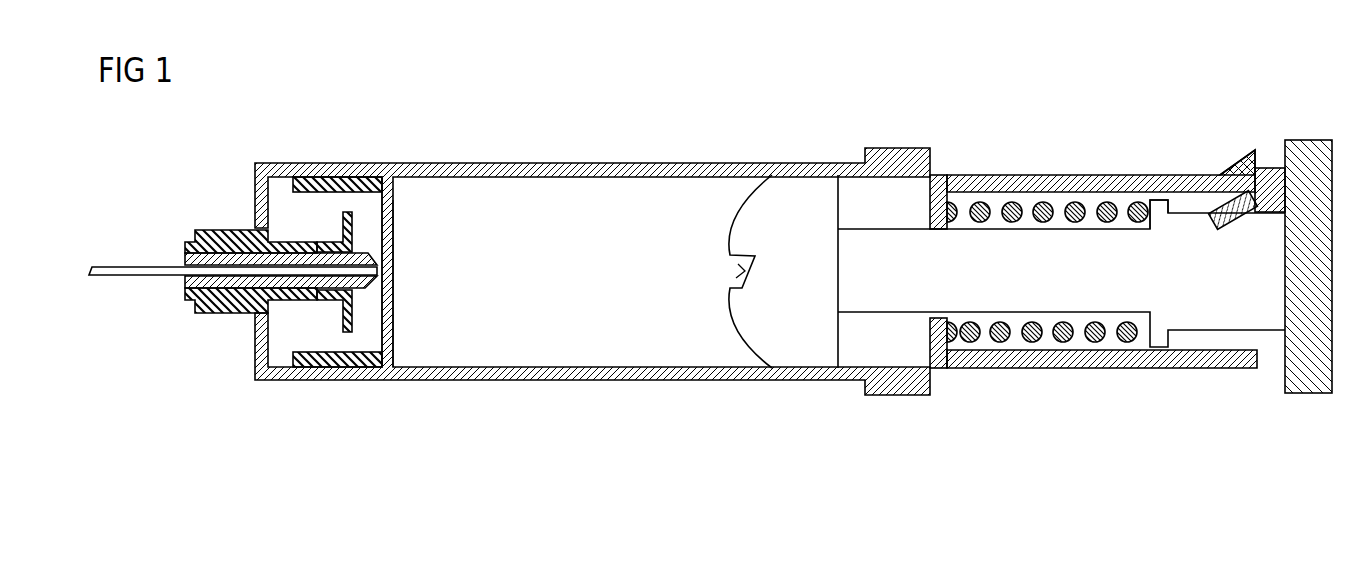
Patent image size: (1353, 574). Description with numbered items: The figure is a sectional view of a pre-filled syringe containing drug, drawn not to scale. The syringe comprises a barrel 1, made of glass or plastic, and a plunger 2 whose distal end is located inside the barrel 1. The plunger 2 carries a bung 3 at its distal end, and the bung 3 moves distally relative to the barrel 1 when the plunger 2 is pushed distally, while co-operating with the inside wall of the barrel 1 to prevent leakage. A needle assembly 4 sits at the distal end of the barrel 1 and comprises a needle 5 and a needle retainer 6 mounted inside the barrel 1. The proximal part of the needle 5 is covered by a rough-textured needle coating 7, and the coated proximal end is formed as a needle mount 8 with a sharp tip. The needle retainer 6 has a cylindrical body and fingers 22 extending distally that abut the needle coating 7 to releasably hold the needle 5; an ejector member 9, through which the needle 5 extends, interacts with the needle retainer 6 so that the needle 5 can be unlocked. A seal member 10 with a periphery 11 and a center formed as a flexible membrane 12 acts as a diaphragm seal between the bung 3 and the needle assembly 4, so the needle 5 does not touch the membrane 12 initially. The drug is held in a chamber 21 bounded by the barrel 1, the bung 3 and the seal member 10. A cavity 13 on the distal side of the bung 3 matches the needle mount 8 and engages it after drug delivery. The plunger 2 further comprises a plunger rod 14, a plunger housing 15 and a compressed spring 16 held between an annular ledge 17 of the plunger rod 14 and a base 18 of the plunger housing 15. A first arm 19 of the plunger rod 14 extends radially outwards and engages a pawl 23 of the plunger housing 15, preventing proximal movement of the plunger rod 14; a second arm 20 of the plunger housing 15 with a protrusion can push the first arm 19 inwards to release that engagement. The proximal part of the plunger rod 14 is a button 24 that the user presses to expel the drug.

The barrel 1 is at (575, 163).
The plunger 2 is at (1085, 253).
The bung 3 is at (795, 355).
The needle assembly 4 is at (233, 278).
The needle 5 is at (138, 278).
The needle retainer 6 is at (236, 246).
The needle coating 7 is at (219, 304).
The needle mount 8 is at (394, 250).
The ejector member 9 is at (343, 310).
The seal member 10 is at (388, 178).
The periphery 11 is at (340, 182).
The flexible membrane 12 is at (394, 310).
The cavity 13 is at (746, 270).
The plunger rod 14 is at (1087, 302).
The plunger housing 15 is at (1163, 372).
The compressed spring 16 is at (1075, 205).
The annular ledge 17 is at (1158, 202).
The base 18 is at (945, 370).
The first arm 19 is at (1212, 220).
The second arm 20 is at (1245, 152).
The chamber 21 is at (682, 205).
The fingers 22 is at (283, 238).
The pawl 23 is at (1266, 213).
The button 24 is at (1311, 382).